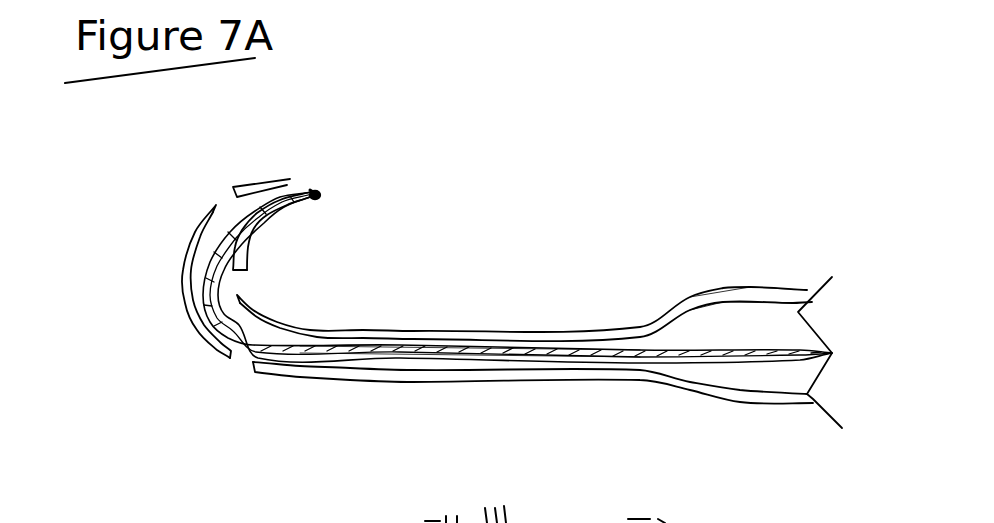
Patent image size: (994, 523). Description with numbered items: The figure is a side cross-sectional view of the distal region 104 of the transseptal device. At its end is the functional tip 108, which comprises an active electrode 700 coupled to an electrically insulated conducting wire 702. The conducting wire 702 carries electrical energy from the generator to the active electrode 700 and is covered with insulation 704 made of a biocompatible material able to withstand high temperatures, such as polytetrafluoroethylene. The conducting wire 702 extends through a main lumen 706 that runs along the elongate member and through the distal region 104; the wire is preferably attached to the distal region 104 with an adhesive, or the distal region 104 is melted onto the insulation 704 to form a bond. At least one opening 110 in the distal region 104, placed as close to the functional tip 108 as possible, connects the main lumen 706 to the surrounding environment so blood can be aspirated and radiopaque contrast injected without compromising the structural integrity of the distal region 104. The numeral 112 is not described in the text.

The distal region 104 is at (524, 166).
The functional tip 108 is at (323, 166).
The opening 110 is at (240, 282).
The outer layer 112 is at (143, 203).
The active electrode 700 is at (321, 194).
The conducting wire 702 is at (444, 354).
The insulation 704 is at (500, 357).
The main lumen 706 is at (729, 325).